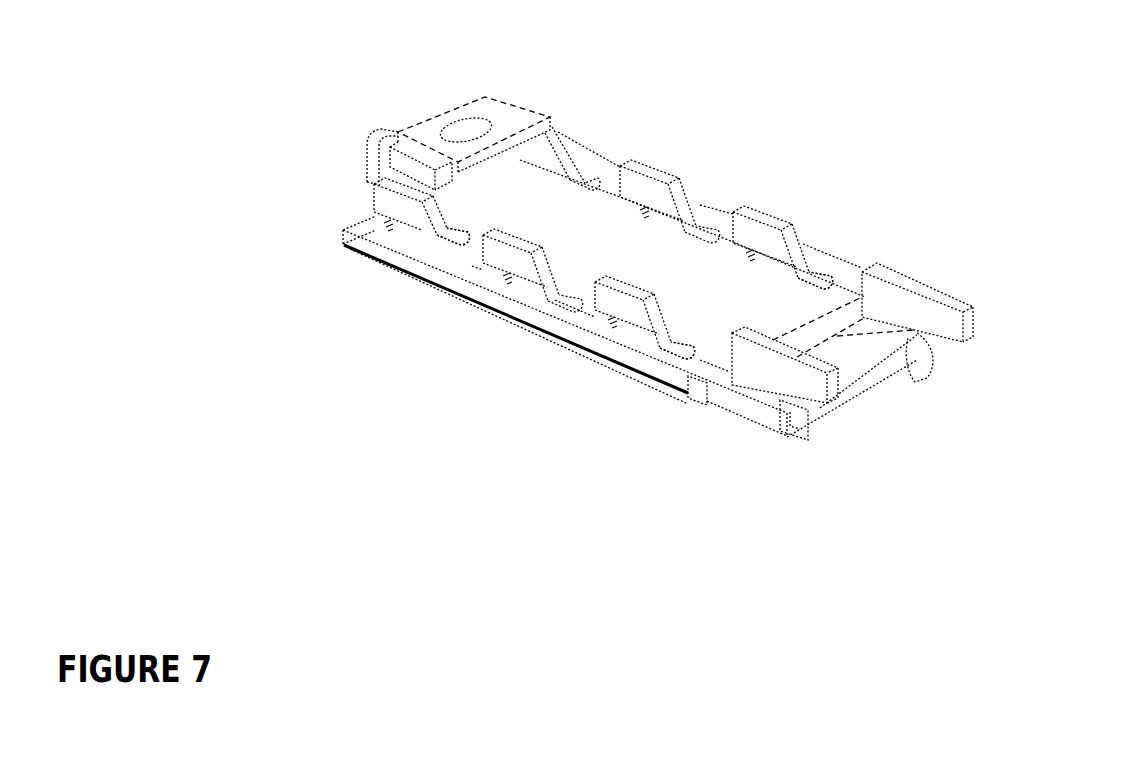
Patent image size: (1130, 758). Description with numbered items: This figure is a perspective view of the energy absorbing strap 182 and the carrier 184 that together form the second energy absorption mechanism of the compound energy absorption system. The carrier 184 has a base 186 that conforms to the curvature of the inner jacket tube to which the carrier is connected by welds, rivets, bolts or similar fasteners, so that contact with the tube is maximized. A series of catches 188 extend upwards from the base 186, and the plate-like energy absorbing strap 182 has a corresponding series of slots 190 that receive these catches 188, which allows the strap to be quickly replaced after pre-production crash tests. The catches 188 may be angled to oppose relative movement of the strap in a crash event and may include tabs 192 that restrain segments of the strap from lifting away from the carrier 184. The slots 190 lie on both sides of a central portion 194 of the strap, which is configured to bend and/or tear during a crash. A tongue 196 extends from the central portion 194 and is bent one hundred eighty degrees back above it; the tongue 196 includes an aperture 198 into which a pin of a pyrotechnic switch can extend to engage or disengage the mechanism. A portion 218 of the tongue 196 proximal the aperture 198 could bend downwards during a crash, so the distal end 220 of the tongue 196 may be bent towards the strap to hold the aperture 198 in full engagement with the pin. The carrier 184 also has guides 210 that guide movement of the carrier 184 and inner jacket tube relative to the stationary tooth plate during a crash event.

The energy absorbing strap 182 is at (722, 296).
The carrier 184 is at (856, 362).
The base 186 is at (863, 395).
The catches 188 is at (765, 216).
The slots 190 is at (817, 270).
The tabs 192 is at (627, 184).
The central portion 194 is at (592, 218).
The tongue 196 is at (389, 115).
The aperture 198 is at (463, 118).
The guides 210 is at (900, 305).
The portion 218 is at (536, 106).
The distal end 220 is at (493, 158).